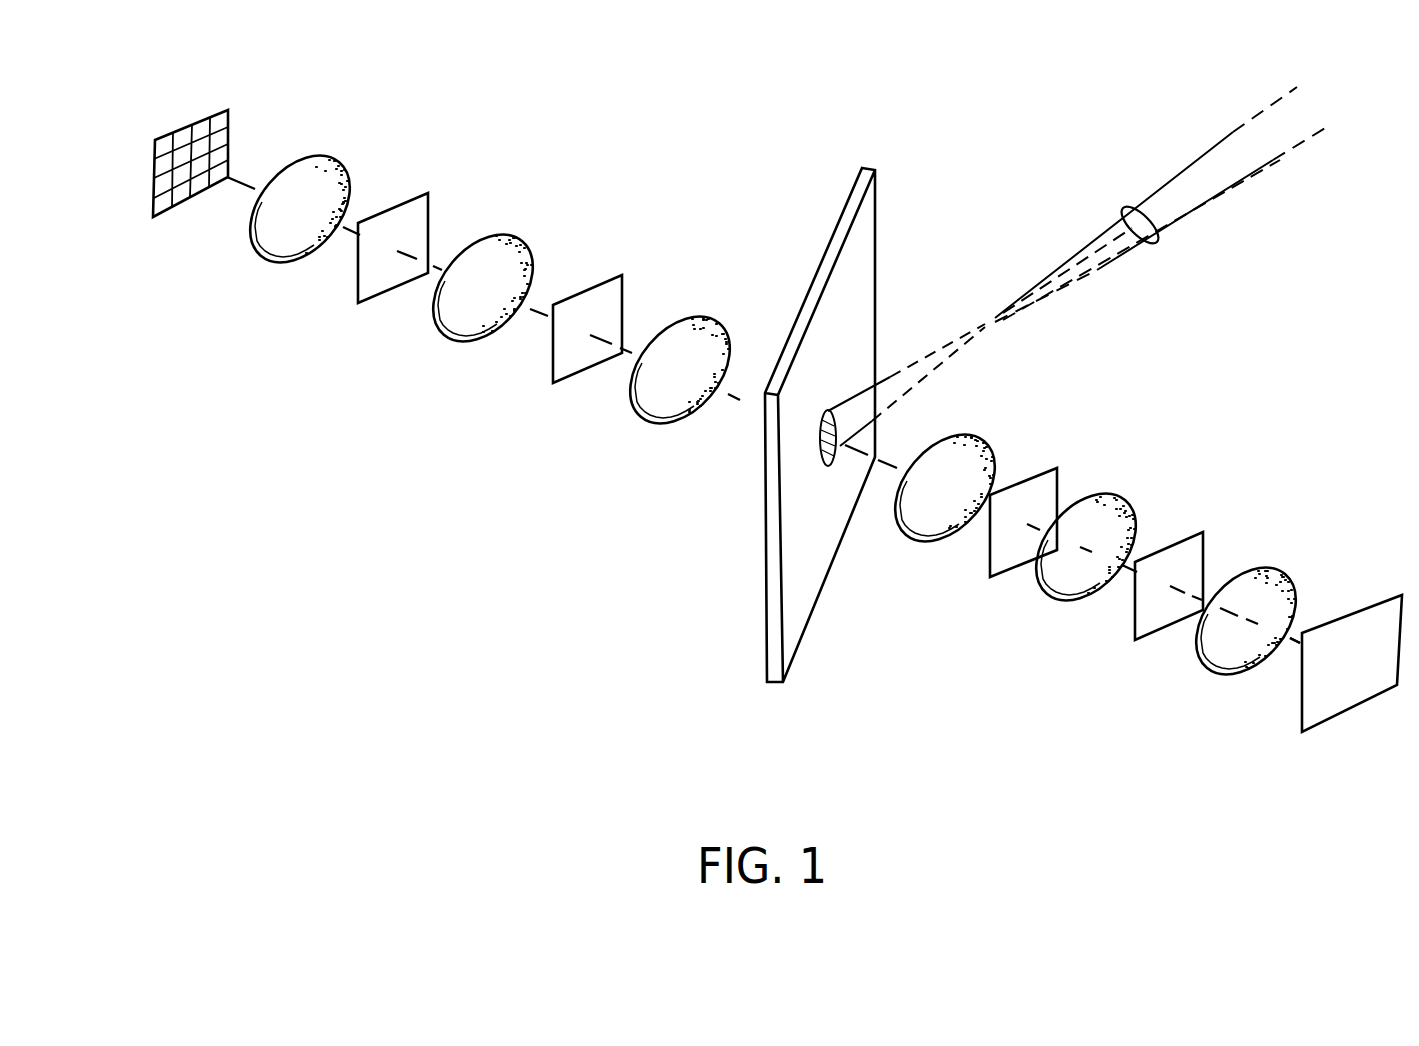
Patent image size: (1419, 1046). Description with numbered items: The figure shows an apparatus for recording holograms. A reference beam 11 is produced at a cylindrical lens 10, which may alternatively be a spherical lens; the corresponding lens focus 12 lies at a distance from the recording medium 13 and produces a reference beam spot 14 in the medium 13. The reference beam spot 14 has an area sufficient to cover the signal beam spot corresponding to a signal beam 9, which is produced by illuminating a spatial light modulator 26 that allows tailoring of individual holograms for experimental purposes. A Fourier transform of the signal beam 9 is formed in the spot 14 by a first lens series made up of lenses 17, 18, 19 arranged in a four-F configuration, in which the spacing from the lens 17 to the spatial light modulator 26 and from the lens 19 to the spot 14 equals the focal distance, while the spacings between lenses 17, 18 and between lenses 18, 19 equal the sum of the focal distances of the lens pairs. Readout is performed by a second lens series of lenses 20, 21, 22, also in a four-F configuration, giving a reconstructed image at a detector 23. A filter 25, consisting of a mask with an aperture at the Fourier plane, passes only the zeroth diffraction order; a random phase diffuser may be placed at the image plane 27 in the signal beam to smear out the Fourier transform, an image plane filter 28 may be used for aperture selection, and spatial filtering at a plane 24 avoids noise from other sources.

The signal beam 9 is at (1295, 647).
The cylindrical lens 10 is at (1150, 243).
The reference beam 11 is at (1161, 204).
The lens focus 12 is at (987, 340).
The recording medium 13 is at (818, 270).
The reference beam spot 14 is at (810, 443).
The first lens of first lens series 17 is at (1203, 665).
The second lens of first lens series 18 is at (1050, 600).
The third lens of first lens series 19 is at (903, 538).
The first lens of second lens series 20 is at (643, 417).
The second lens of second lens series 21 is at (443, 340).
The third lens of second lens series 22 is at (260, 257).
The detector 23 is at (220, 123).
The plane 24 is at (420, 207).
The filter 25 is at (1207, 538).
The spatial light modulator 26 is at (1362, 613).
The image plane 27 is at (1060, 477).
The image plane filter 28 is at (622, 283).